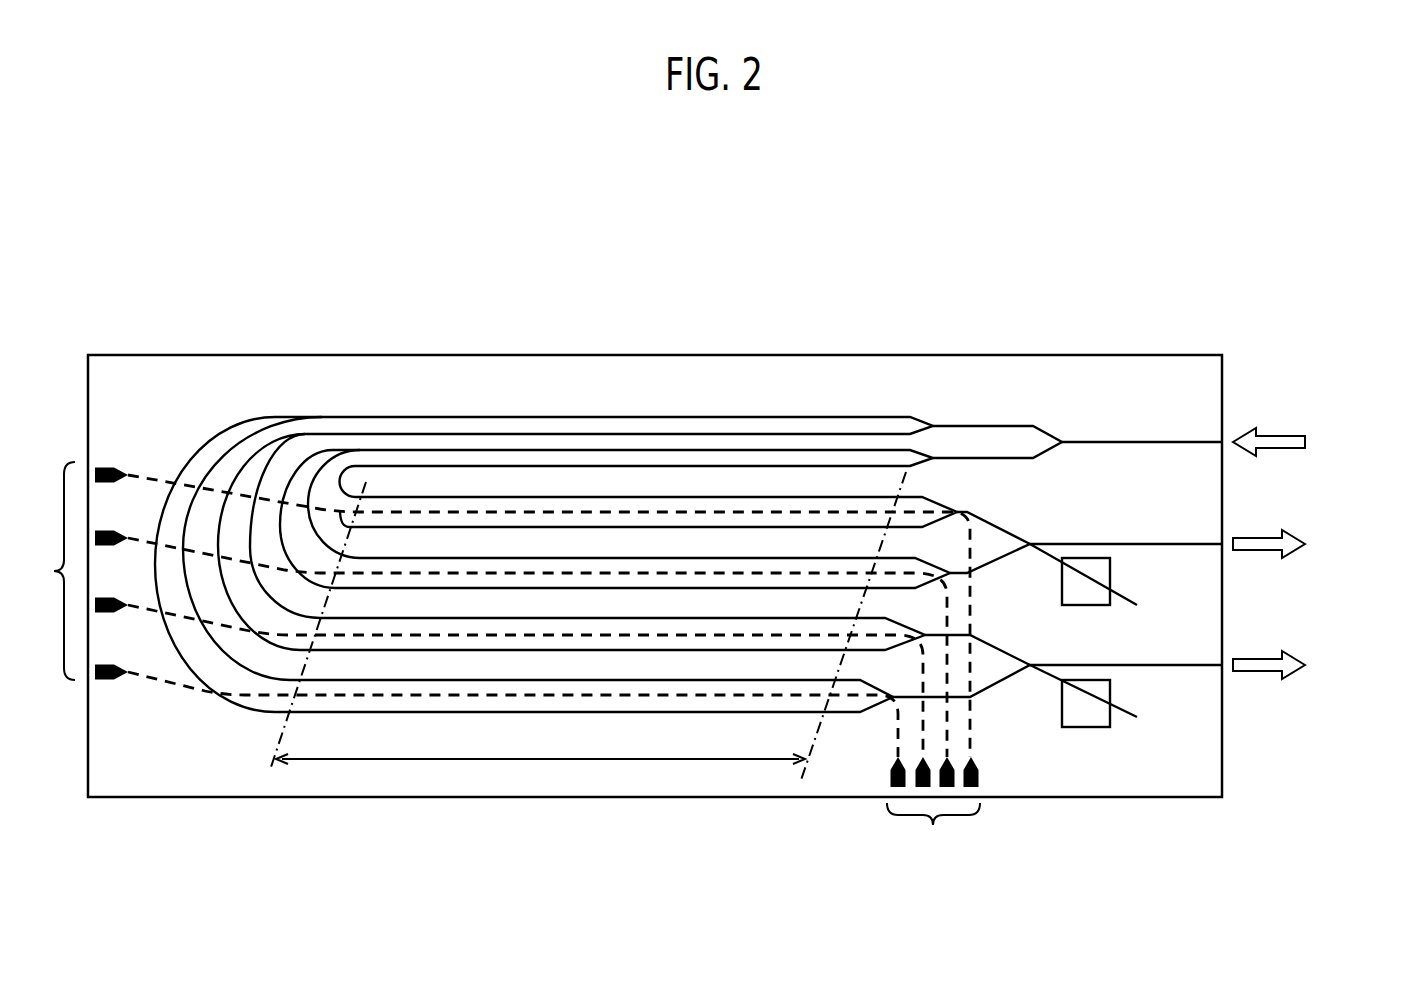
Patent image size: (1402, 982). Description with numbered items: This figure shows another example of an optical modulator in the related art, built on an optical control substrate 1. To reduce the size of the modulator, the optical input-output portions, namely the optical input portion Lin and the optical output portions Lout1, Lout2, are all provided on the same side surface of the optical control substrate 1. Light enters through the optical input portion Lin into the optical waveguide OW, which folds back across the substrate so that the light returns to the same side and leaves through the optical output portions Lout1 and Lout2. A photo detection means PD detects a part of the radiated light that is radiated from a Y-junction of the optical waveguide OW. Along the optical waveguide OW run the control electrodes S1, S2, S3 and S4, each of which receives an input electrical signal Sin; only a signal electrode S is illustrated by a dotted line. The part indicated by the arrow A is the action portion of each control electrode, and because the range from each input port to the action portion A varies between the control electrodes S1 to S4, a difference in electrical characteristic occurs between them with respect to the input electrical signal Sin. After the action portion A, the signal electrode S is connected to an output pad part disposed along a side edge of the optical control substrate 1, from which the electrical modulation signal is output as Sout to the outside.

The optical control substrate 1 is at (1010, 373).
The optical waveguide OW is at (777, 417).
The control electrode S1 is at (532, 595).
The control electrode S2 is at (521, 629).
The control electrode S3 is at (509, 662).
The control electrode S4 is at (496, 696).
The input electrical signal Sin is at (45, 571).
The output electrical signal Sout is at (933, 808).
The photo detection means PD is at (1087, 713).
The signal electrode S is at (653, 704).
The action portion A is at (540, 745).
The optical input portion Lin is at (1298, 442).
The optical output portion Lout1 is at (1309, 543).
The optical output portion Lout2 is at (1309, 666).